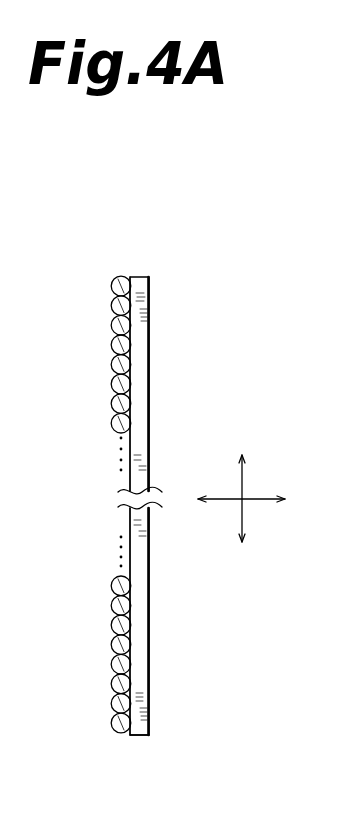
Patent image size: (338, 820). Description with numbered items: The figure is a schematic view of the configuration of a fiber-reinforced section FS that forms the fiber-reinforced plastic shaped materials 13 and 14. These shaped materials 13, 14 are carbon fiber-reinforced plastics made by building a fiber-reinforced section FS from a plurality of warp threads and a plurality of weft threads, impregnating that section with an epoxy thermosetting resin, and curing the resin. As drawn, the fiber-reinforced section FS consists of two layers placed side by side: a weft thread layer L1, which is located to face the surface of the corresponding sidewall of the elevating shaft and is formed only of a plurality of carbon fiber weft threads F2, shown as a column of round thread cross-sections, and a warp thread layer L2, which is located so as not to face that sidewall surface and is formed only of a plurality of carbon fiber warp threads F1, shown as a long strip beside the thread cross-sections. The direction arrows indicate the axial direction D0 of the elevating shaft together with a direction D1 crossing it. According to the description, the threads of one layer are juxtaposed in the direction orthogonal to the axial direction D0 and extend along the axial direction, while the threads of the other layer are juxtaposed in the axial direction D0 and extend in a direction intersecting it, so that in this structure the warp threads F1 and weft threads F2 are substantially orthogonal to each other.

The fiber-reinforced plastic shaped material 13 is at (184, 506).
The fiber-reinforced plastic shaped material 14 is at (150, 317).
The carbon fiber warp threads F1 is at (142, 276).
The carbon fiber weft threads F2 is at (113, 285).
The fiber-reinforced section FS is at (130, 270).
The weft thread layer L1 is at (112, 719).
The warp thread layer L2 is at (150, 735).
The axial direction D0 is at (241, 481).
The thickness direction D1 is at (255, 502).